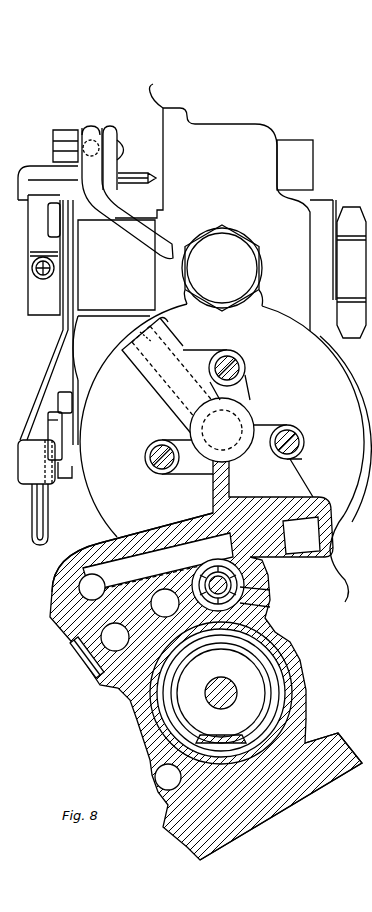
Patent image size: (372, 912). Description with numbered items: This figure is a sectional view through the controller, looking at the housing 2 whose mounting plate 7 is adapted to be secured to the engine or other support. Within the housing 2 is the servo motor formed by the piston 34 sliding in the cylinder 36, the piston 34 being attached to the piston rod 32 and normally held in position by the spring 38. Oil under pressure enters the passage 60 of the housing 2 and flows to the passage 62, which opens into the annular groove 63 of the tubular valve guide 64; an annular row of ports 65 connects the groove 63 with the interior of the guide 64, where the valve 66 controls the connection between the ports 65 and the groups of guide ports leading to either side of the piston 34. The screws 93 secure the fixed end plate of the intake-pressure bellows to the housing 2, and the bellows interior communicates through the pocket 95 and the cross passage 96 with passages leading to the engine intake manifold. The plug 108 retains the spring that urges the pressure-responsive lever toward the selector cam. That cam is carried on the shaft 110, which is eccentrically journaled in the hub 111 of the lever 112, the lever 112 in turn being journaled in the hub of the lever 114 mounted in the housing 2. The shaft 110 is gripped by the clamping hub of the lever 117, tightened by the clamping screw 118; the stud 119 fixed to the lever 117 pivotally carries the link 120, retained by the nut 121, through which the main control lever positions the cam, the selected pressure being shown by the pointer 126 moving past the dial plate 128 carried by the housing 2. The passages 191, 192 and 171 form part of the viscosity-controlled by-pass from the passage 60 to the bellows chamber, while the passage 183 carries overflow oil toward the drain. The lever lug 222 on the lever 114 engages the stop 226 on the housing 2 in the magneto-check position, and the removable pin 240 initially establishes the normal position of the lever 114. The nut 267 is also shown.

The housing 2 is at (220, 124).
The mounting plate 7 is at (296, 808).
The piston rod 32 is at (220, 683).
The piston 34 is at (300, 660).
The cylinder 36 is at (288, 718).
The spring 38 is at (268, 702).
The passage 60 is at (60, 582).
The passage 62 is at (158, 548).
The annular groove 63 is at (238, 578).
The tubular valve guide 64 is at (235, 600).
The ports 65 is at (216, 562).
The valve 66 is at (231, 584).
The screws 93 is at (246, 366).
The pocket 95 is at (230, 418).
The cross passage 96 is at (154, 376).
The plug 108 is at (232, 244).
The shaft 110 is at (32, 268).
The hub 111 is at (28, 204).
The lever 112 is at (27, 462).
The lever 114 is at (42, 543).
The lever 117 is at (113, 128).
The clamping screw 118 is at (43, 280).
The stud 119 is at (126, 150).
The link 120 is at (92, 126).
The nut 121 is at (64, 130).
The pointer 126 is at (142, 172).
The dial plate 128 is at (155, 88).
The passage 171 is at (165, 598).
The passage 183 is at (155, 777).
The passage 191 is at (72, 672).
The passage 192 is at (110, 597).
The lever lug 222 is at (62, 440).
The stop 226 is at (72, 405).
The removable pin 240 is at (62, 496).
The nut 267 is at (350, 207).